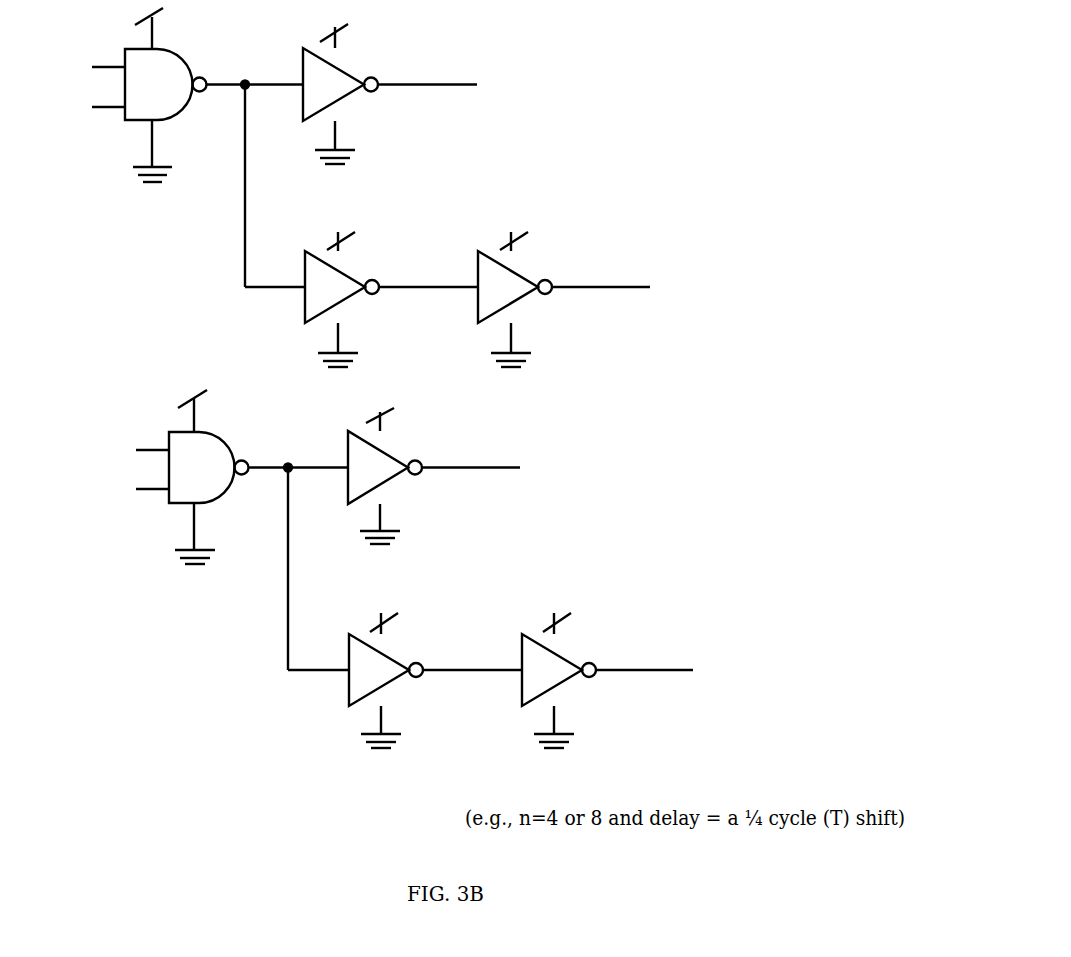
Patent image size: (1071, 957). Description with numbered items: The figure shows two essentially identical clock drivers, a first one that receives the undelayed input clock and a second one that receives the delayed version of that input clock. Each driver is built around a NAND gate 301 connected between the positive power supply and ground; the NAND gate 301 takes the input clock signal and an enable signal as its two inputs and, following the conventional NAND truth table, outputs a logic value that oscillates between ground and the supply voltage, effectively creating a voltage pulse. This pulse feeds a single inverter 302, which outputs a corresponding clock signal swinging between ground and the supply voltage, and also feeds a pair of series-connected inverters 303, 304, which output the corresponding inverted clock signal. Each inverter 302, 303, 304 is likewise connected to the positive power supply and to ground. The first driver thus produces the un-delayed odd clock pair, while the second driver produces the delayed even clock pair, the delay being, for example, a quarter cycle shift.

The NAND gate 301 is at (165, 97).
The inverter 302 is at (341, 90).
The inverter 303 is at (343, 293).
The inverter 304 is at (516, 293).